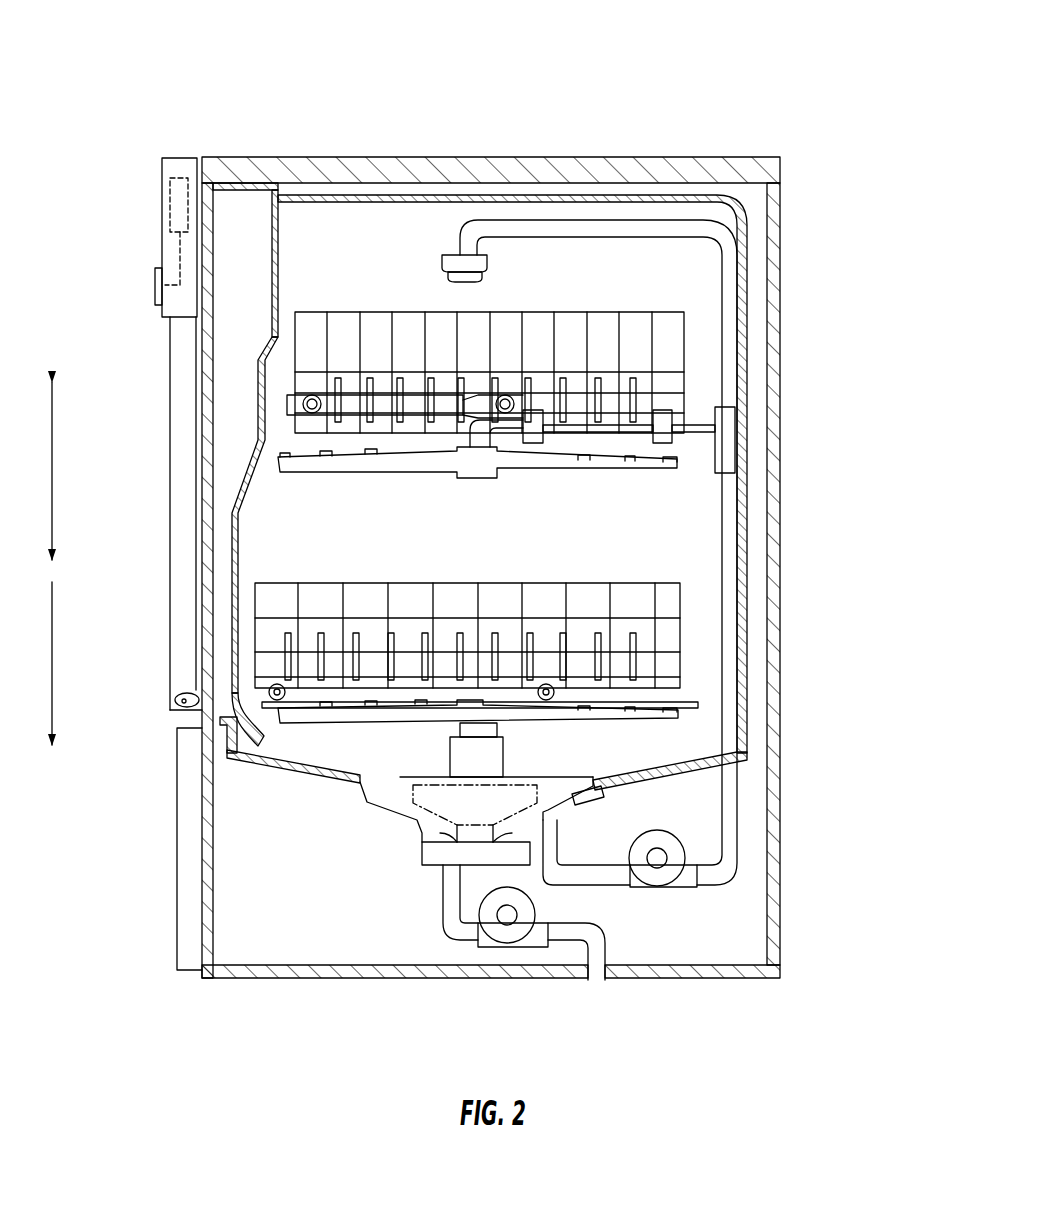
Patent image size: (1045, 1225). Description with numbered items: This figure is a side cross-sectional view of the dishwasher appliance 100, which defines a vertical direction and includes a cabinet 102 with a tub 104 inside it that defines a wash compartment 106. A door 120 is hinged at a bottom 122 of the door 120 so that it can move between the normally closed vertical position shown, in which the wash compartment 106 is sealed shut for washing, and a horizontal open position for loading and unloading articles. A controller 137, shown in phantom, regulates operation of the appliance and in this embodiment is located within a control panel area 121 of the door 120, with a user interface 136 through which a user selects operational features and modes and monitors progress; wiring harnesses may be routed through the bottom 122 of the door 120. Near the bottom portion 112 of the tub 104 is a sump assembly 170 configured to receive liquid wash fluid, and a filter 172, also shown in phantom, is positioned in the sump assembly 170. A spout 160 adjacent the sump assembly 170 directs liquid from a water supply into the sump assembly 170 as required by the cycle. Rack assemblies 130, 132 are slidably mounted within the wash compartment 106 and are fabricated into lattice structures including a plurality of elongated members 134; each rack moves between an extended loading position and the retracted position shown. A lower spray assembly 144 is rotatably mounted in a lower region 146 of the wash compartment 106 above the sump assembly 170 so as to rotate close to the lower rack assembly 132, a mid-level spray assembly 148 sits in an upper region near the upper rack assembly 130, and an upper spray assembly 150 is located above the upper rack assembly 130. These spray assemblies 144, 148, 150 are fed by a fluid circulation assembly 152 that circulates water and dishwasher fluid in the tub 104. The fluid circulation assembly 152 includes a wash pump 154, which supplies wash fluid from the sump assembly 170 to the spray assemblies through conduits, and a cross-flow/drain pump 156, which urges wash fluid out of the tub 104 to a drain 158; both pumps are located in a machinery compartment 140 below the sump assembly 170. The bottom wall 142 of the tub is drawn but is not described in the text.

The dishwasher appliance 100 is at (666, 48).
The cabinet 102 is at (782, 207).
The tub 104 is at (663, 775).
The wash compartment 106 is at (270, 528).
The bottom portion 112 is at (298, 748).
The door 120 is at (170, 596).
The control panel area 121 is at (162, 231).
The bottom 122 is at (172, 722).
The rack assembly 130 is at (334, 308).
The rack assembly 132 is at (549, 578).
The elongated members 134 is at (380, 370).
The user interface 136 is at (155, 290).
The controller 137 is at (163, 205).
The machinery compartment 140 is at (325, 950).
The tub bottom wall 142 is at (700, 782).
The lower spray assembly 144 is at (337, 722).
The lower region 146 is at (692, 733).
The mid-level spray assembly 148 is at (513, 463).
The upper spray assembly 150 is at (490, 268).
The fluid circulation assembly 152 is at (733, 289).
The wash pump 154 is at (643, 850).
The cross-flow/drain pump 156 is at (500, 935).
The drain 158 is at (599, 986).
The spout 160 is at (604, 796).
The sump assembly 170 is at (356, 804).
The filter 172 is at (403, 820).